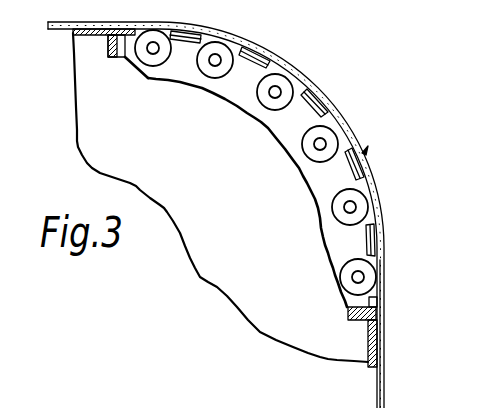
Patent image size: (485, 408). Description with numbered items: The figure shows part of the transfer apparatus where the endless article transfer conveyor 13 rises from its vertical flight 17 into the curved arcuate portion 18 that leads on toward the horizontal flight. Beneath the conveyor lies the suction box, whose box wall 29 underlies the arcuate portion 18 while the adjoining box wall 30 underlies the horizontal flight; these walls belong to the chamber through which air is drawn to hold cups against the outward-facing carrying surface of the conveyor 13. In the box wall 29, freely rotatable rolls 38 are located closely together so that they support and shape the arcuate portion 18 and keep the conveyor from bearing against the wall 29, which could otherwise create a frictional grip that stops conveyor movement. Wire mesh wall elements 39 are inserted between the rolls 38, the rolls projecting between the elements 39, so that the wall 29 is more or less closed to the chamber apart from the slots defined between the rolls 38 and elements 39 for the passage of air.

The endless article transfer conveyor 13 is at (364, 152).
The vertical flight 17 is at (382, 384).
The arcuate portion 18 is at (382, 217).
The box wall 29 is at (278, 121).
The box wall 30 is at (94, 31).
The freely rotatable rolls 38 is at (334, 208).
The wall elements 39 is at (262, 56).